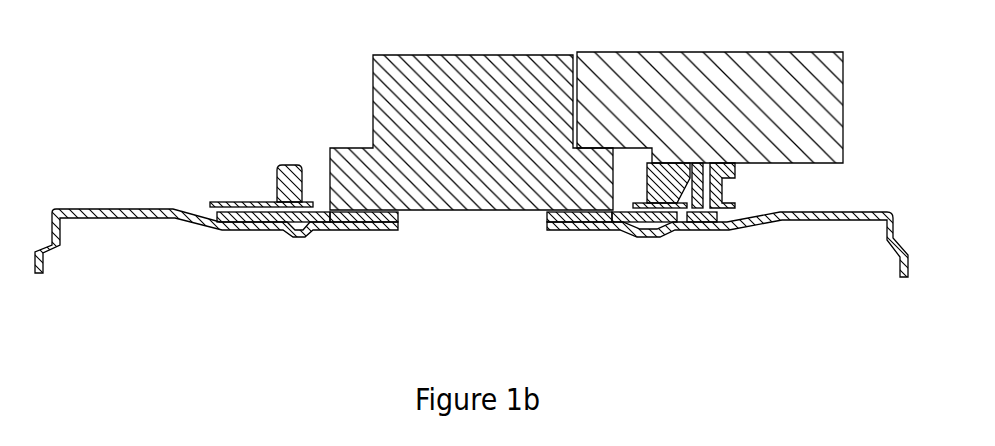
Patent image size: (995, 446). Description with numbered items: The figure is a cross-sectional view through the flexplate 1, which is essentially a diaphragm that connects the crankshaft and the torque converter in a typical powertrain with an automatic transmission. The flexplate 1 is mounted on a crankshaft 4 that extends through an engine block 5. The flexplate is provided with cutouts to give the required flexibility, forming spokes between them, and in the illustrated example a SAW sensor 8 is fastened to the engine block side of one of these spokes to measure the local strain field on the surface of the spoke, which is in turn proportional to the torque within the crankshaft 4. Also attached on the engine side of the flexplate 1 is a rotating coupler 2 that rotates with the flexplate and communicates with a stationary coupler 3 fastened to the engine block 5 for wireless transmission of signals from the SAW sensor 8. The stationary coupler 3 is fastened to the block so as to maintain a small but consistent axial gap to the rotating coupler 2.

The flexplate 1 is at (130, 214).
The rotating coupler 2 is at (287, 216).
The stationary coupler 3 is at (243, 202).
The crankshaft 4 is at (450, 143).
The engine block 5 is at (753, 107).
The SAW sensor 8 is at (693, 222).